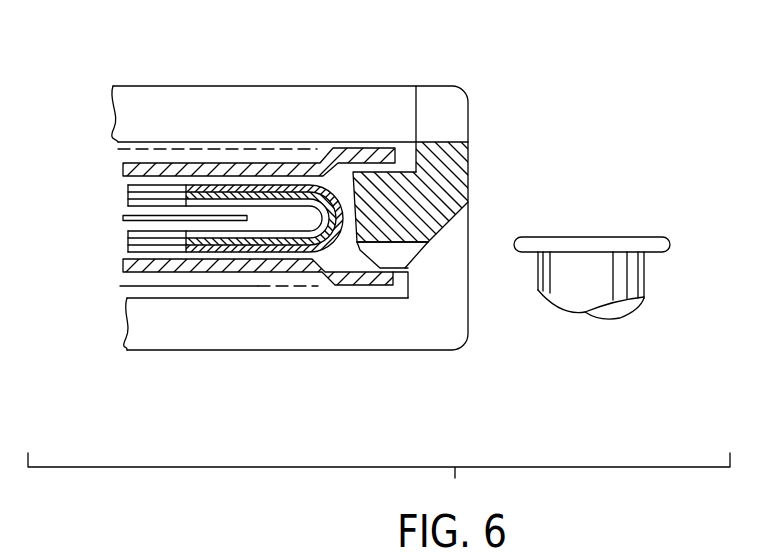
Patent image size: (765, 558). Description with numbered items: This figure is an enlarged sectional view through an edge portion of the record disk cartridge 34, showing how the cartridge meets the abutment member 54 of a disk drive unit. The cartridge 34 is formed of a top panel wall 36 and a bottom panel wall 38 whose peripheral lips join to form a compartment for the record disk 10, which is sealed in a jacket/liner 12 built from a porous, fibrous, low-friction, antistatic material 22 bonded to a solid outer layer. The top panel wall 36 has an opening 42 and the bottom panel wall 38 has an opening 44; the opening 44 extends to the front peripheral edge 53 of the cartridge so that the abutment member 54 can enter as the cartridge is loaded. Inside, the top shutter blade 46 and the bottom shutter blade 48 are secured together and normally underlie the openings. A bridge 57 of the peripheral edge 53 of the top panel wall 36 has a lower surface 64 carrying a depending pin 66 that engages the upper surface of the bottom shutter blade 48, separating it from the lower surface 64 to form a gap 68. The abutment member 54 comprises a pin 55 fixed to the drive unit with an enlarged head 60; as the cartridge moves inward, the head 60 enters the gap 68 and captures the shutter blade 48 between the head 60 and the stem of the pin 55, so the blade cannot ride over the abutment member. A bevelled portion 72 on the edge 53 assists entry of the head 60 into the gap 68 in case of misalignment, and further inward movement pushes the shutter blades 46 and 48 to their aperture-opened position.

The record disk 10 is at (125, 222).
The jacket/liner 12 is at (130, 188).
The porous, fibrous, low-friction, antistatic material 22 is at (132, 199).
The record disk cartridge 34 is at (350, 73).
The top panel wall 36 is at (212, 103).
The bottom panel wall 38 is at (350, 352).
The opening 42 is at (305, 103).
The opening 44 is at (252, 336).
The top shutter blade 46 is at (352, 147).
The bottom shutter blade 48 is at (382, 282).
The peripheral edge 53 is at (470, 147).
The abutment member 54 is at (628, 257).
The pin 55 is at (622, 268).
The bridge 57 is at (463, 170).
The enlarged head 60 is at (652, 237).
The lower surface 64 is at (423, 248).
The depending pin 66 is at (408, 252).
The gap 68 is at (418, 252).
The bevelled portion 72 is at (458, 215).